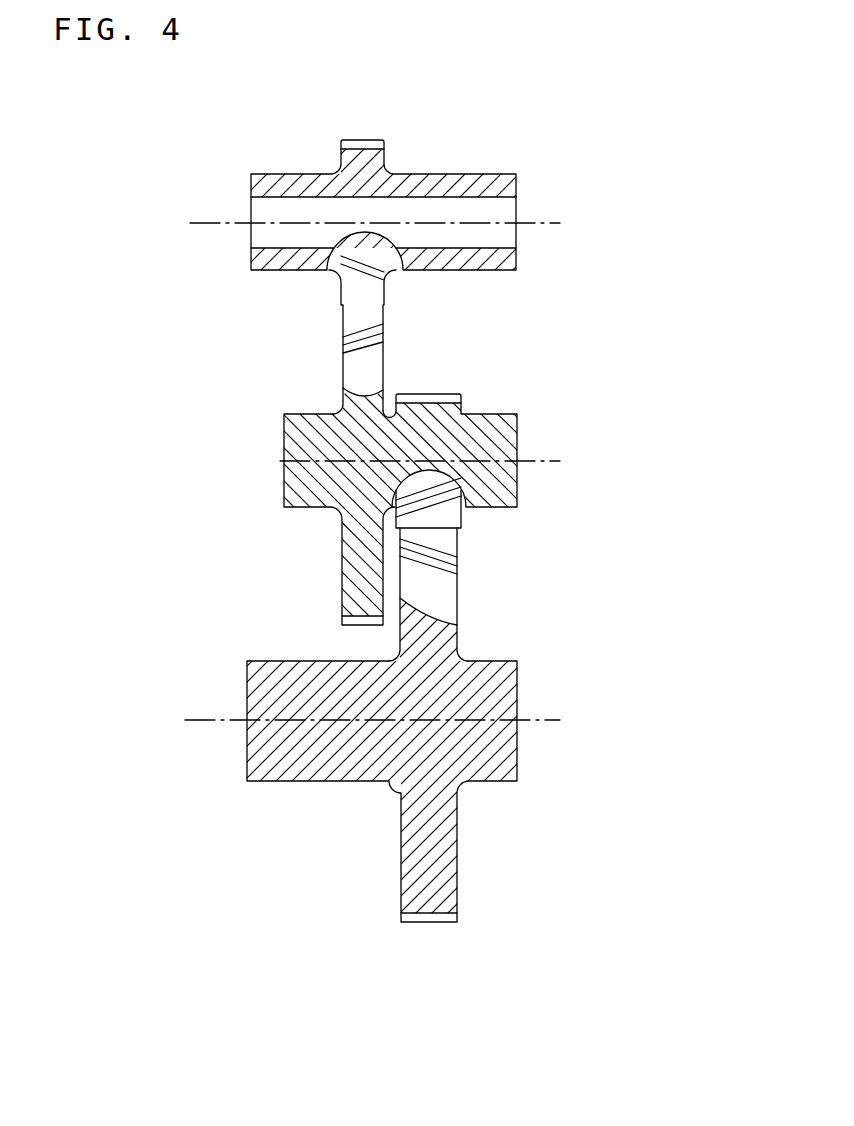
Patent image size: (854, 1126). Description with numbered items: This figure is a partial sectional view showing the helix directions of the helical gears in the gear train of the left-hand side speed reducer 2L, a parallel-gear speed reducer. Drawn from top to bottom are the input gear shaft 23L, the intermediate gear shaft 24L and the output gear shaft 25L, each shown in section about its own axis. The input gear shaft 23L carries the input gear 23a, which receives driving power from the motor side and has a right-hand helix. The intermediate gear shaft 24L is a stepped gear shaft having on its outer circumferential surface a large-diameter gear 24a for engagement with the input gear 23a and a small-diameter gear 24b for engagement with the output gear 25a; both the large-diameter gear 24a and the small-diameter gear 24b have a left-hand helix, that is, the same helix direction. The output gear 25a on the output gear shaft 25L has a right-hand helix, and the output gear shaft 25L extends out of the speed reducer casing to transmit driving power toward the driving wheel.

The speed reducer 2L is at (552, 866).
The input gear shaft 23L is at (529, 269).
The input gear 23a is at (372, 274).
The large-diameter gear 24a is at (383, 333).
The intermediate gear shaft 24L is at (532, 493).
The small-diameter gear 24b is at (430, 502).
The output gear 25a is at (430, 560).
The output gear shaft 25L is at (532, 775).